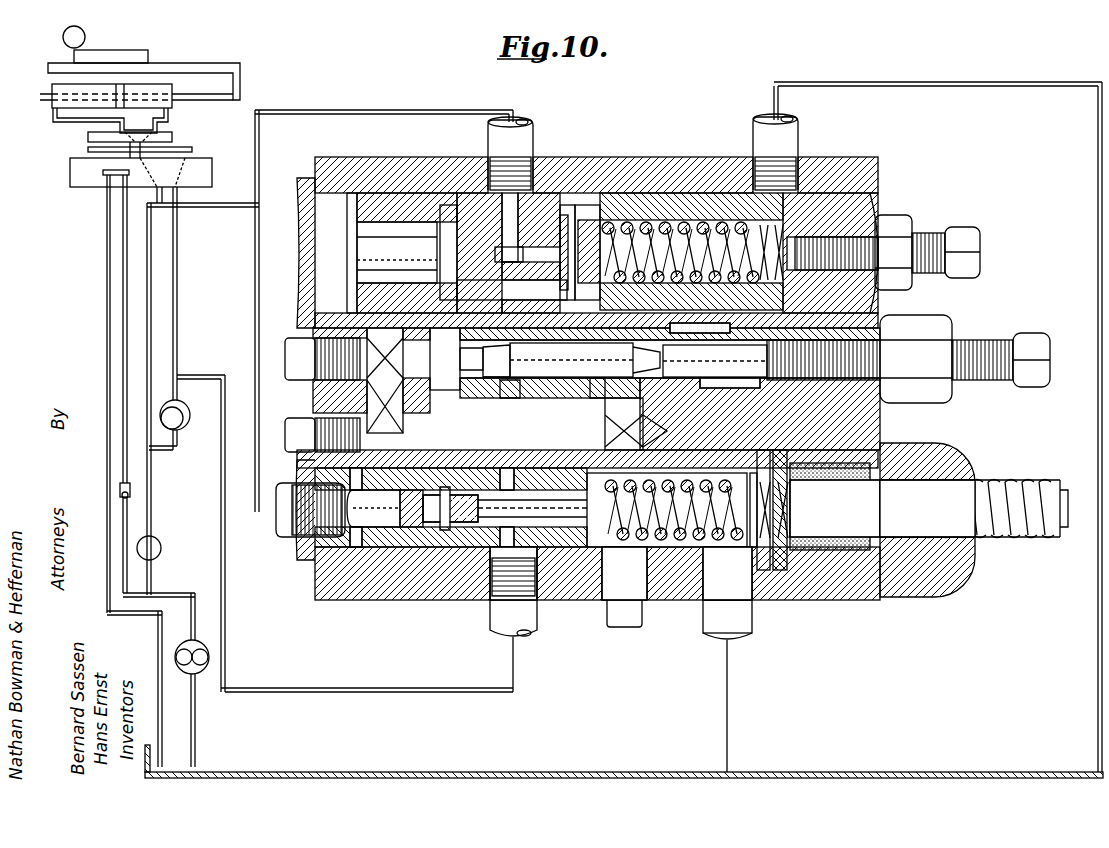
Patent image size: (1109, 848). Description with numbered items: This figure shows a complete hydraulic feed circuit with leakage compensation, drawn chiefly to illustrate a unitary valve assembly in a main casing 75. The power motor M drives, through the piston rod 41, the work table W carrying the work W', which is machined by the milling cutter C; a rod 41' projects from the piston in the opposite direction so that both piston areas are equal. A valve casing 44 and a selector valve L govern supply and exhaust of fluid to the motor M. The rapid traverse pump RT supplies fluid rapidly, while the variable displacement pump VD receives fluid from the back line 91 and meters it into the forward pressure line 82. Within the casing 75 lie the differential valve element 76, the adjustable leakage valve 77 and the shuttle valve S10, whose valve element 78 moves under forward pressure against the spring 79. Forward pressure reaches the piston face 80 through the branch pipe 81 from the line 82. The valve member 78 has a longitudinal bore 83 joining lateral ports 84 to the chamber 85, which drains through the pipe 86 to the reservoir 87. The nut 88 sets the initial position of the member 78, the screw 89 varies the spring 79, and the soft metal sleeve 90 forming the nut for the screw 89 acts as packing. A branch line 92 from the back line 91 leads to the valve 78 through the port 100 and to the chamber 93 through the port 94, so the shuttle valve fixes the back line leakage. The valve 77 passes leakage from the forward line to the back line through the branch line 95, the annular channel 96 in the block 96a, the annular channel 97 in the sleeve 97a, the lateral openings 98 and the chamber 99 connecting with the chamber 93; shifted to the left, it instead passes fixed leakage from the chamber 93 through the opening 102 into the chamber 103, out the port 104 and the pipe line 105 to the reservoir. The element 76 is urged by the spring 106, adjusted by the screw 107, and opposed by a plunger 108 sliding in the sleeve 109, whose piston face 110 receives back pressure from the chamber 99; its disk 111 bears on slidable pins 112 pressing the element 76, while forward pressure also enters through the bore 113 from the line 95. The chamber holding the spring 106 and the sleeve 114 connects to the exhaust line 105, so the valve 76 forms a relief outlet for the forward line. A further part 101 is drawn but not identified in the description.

The milling cutter C is at (84, 33).
The work W' is at (123, 45).
The work table W is at (126, 79).
The rod 41' is at (122, 87).
The power motor M is at (52, 105).
The piston rod 41 is at (137, 115).
The valve casing 44 is at (88, 137).
The selector valve L is at (70, 177).
The forward pressure line 82 is at (150, 295).
The branch pipe 81 is at (255, 357).
The branch line 95 is at (403, 110).
The back line 91 is at (178, 322).
The variable displacement pump VD is at (178, 430).
The rapid traverse pump RT is at (188, 641).
The branch line 92 is at (405, 692).
The pipe line 105 is at (988, 87).
The reservoir 87 is at (805, 772).
The pipe 86 is at (728, 673).
The annular channel 96 is at (510, 210).
The main casing 75 is at (818, 597).
The piston face 110 is at (313, 237).
The sleeve 109 is at (378, 200).
The plunger 108 is at (397, 252).
The disk 111 is at (448, 245).
The bore 113 is at (608, 200).
The block 96a is at (578, 205).
The sleeve 114 is at (688, 205).
The differential valve element 76 is at (650, 175).
The spring 106 is at (800, 190).
The screw 107 is at (937, 233).
The chamber 93 is at (344, 395).
The chamber 99 is at (393, 380).
The slidable pins 112 is at (512, 330).
The leakage valve 77 is at (585, 360).
The chamber 103 is at (688, 375).
The port 104 is at (745, 335).
The screw 89 is at (995, 483).
The opening 102 is at (636, 423).
The lateral openings 98 is at (506, 388).
The annular channel 97 is at (512, 390).
The sleeve 97a is at (603, 398).
The port 94 is at (517, 458).
The longitudinal bore 83 is at (582, 548).
The piston face 80 is at (348, 506).
The lateral ports 84 is at (432, 527).
The valve stem 101 is at (480, 545).
The spring 79 is at (680, 535).
The chamber 85 is at (718, 540).
The sleeve 90 is at (897, 587).
The nut 88 is at (917, 580).
The valve element 78 is at (372, 527).
The shuttle valve S10 is at (392, 530).
The port 100 is at (513, 548).